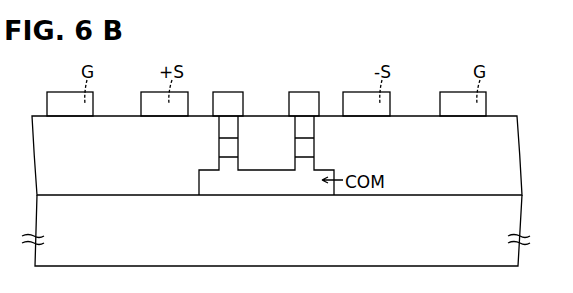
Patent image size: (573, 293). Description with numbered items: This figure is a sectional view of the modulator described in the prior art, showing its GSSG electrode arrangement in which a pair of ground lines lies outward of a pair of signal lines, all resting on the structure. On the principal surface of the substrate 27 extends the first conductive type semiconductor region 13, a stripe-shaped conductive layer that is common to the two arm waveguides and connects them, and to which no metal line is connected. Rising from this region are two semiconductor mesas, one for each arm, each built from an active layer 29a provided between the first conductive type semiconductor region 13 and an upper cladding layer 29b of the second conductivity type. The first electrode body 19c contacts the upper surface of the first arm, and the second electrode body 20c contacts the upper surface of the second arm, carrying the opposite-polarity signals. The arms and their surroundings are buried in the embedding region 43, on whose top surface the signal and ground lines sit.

The first conductive type semiconductor region 13 is at (208, 186).
The first electrode body 19c is at (230, 87).
The second electrode body 20c is at (306, 87).
The substrate 27 is at (276, 230).
The active layer 29a is at (316, 145).
The upper cladding layer 29b is at (217, 133).
The embedding region 43 is at (277, 155).